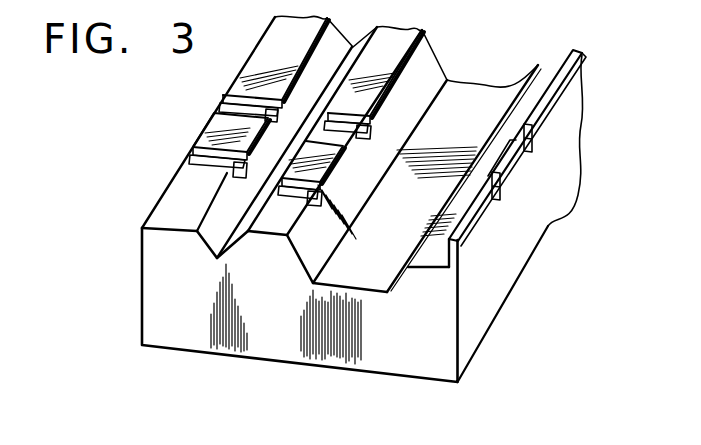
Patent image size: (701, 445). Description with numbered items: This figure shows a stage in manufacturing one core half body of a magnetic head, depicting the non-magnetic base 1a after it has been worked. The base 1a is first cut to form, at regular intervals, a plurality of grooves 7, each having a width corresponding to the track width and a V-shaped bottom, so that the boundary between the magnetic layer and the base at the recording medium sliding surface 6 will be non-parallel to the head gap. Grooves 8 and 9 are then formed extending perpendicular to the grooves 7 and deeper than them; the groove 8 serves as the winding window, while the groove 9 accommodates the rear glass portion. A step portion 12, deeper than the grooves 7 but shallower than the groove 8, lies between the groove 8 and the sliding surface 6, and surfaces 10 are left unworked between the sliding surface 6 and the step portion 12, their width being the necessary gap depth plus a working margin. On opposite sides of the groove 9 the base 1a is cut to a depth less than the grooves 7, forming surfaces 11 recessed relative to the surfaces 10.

The non-magnetic base 1a is at (297, 343).
The recording medium sliding surface 6 is at (508, 270).
The grooves 7 is at (222, 110).
The groove 8 is at (357, 277).
The groove 9 is at (213, 236).
The surfaces 10 is at (576, 90).
The surfaces 11 is at (163, 205).
The step portion 12 is at (433, 253).